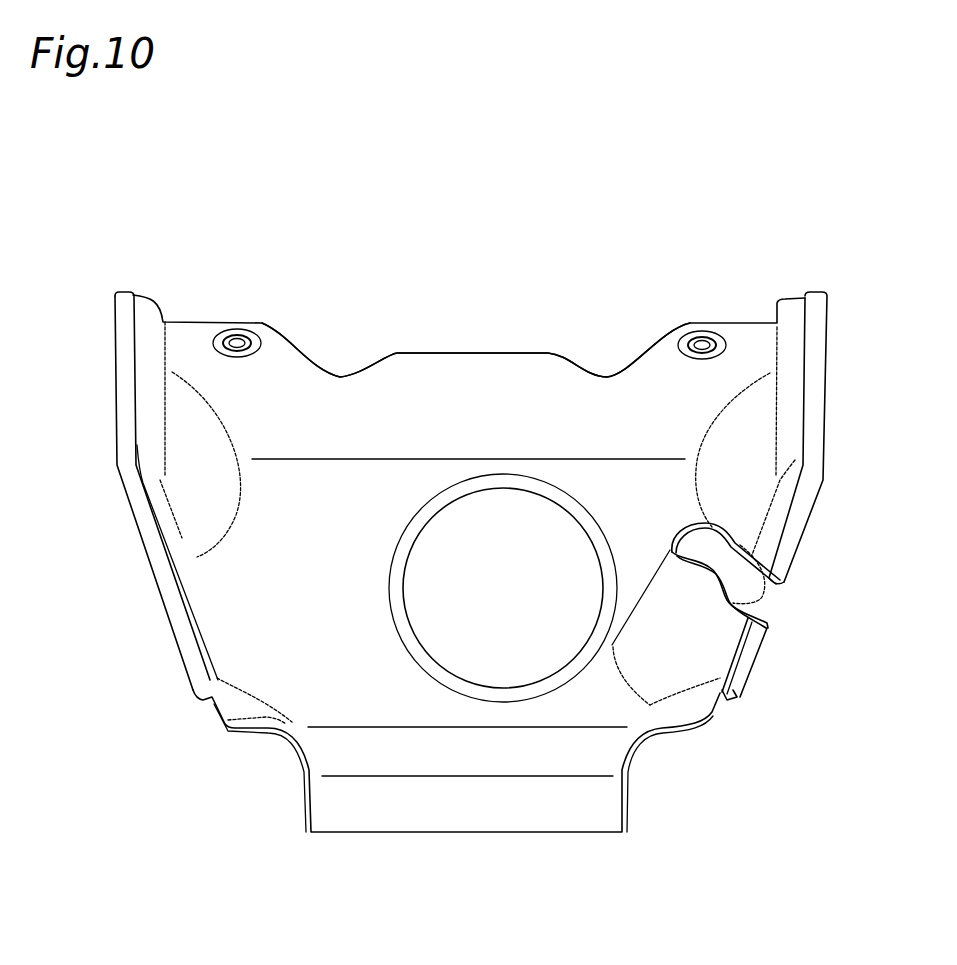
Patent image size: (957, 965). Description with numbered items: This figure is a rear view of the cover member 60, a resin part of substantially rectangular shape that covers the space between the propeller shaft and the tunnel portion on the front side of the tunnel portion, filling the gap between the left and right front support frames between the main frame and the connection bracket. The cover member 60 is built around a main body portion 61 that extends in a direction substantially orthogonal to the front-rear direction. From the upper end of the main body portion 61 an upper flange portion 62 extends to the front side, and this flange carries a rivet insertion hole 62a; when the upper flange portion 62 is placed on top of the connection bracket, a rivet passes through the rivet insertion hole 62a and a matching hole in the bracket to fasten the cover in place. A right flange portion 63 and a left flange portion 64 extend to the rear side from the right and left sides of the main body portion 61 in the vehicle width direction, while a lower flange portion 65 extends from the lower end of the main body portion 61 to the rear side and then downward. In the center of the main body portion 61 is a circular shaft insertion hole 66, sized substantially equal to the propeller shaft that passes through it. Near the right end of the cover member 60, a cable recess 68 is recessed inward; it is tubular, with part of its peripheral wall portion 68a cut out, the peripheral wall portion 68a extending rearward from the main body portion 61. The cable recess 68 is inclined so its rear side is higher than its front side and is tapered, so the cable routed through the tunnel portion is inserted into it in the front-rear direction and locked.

The cover member 60 is at (510, 336).
The main body portion 61 is at (376, 512).
The upper flange portion 62 is at (292, 377).
The rivet insertion hole 62a is at (237, 332).
The right flange portion 63 is at (805, 503).
The left flange portion 64 is at (147, 535).
The lower flange portion 65 is at (497, 813).
The shaft insertion hole 66 is at (463, 680).
The cable recess 68 is at (723, 550).
The peripheral wall portion 68a is at (697, 640).